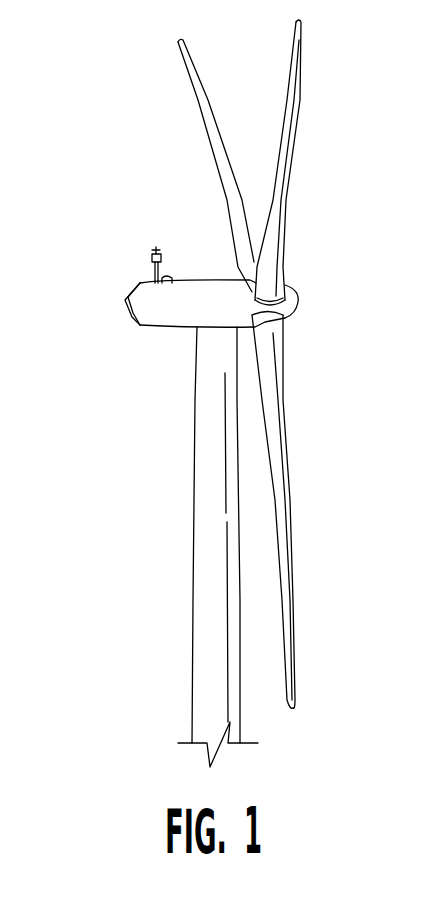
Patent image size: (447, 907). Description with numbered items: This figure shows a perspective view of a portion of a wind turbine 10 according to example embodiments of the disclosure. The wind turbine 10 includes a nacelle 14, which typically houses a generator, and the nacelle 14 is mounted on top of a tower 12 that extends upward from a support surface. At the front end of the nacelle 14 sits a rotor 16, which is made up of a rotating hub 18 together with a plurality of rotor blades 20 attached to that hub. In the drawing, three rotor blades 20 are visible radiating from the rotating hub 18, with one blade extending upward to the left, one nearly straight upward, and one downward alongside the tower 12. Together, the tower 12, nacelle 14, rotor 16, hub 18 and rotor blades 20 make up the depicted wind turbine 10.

The wind turbine 10 is at (98, 109).
The tower 12 is at (195, 582).
The nacelle 14 is at (165, 340).
The rotor 16 is at (320, 297).
The rotating hub 18 is at (300, 306).
The rotor blades 20 is at (222, 143).